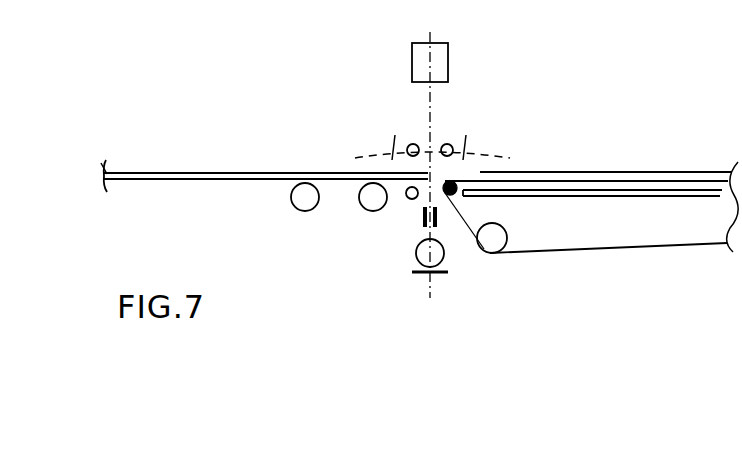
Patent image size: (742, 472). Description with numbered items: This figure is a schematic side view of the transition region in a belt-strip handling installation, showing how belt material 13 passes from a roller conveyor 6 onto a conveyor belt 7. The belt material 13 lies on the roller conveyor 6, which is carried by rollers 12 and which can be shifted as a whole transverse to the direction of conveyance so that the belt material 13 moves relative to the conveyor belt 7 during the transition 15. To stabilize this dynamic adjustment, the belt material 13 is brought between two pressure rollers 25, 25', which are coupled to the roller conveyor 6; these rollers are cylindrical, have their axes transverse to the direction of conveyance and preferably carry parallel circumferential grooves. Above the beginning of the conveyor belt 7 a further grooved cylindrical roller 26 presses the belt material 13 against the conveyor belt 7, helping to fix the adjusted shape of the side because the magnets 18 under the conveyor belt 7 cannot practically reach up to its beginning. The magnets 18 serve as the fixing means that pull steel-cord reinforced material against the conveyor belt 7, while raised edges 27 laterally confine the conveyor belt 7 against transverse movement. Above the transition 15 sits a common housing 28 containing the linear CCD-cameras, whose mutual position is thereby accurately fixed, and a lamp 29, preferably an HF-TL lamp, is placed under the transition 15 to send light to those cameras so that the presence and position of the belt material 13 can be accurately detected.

The roller conveyor 6 is at (276, 200).
The conveyor belt 7 is at (645, 243).
The rollers 12 is at (370, 200).
The belt material 13 is at (203, 173).
The transition 15 is at (417, 218).
The magnets 18 is at (695, 188).
The pressure roller 25 is at (389, 124).
The pressure roller 25' is at (386, 227).
The cylindrical roller 26 is at (452, 146).
The raised edges 27 is at (578, 178).
The common housing 28 is at (437, 62).
The lamp 29 is at (447, 258).